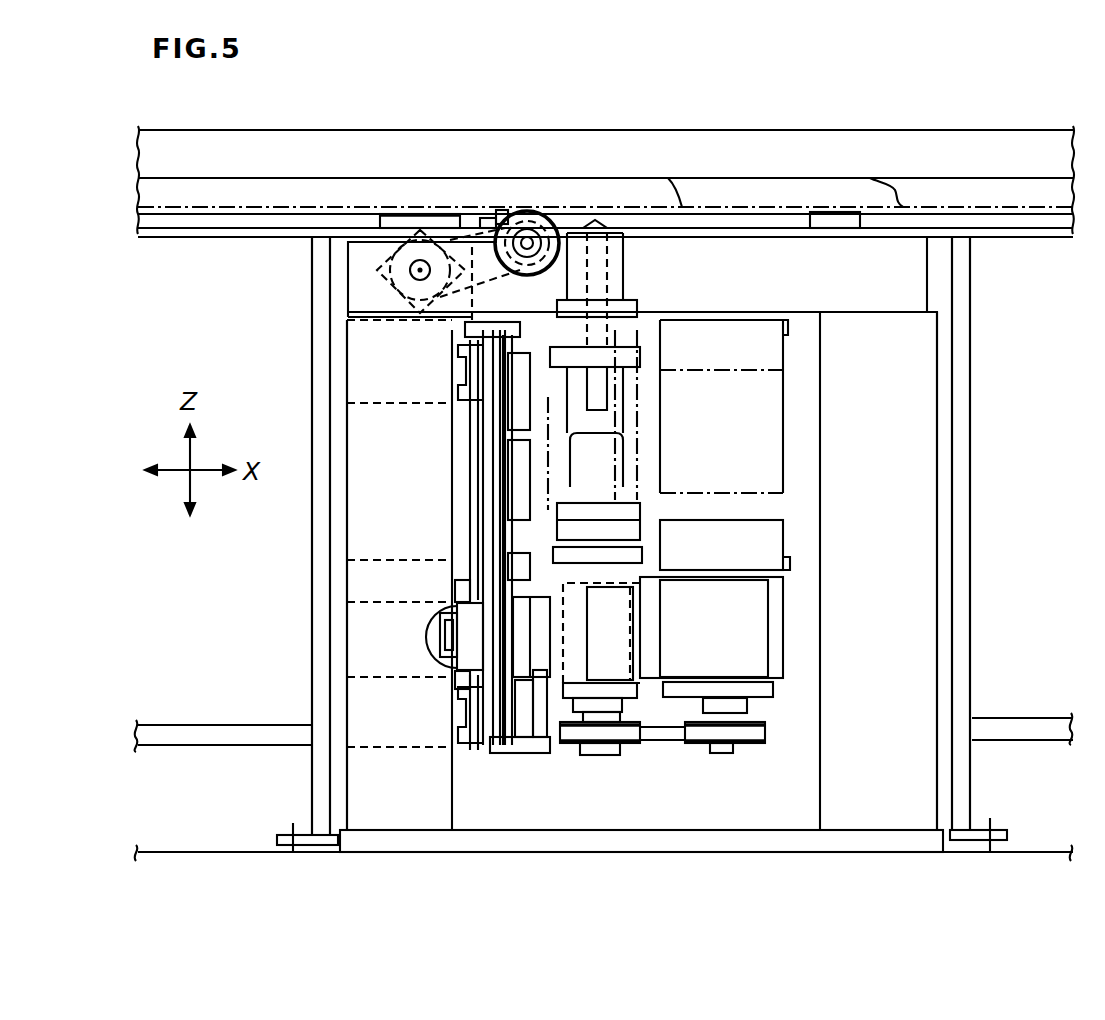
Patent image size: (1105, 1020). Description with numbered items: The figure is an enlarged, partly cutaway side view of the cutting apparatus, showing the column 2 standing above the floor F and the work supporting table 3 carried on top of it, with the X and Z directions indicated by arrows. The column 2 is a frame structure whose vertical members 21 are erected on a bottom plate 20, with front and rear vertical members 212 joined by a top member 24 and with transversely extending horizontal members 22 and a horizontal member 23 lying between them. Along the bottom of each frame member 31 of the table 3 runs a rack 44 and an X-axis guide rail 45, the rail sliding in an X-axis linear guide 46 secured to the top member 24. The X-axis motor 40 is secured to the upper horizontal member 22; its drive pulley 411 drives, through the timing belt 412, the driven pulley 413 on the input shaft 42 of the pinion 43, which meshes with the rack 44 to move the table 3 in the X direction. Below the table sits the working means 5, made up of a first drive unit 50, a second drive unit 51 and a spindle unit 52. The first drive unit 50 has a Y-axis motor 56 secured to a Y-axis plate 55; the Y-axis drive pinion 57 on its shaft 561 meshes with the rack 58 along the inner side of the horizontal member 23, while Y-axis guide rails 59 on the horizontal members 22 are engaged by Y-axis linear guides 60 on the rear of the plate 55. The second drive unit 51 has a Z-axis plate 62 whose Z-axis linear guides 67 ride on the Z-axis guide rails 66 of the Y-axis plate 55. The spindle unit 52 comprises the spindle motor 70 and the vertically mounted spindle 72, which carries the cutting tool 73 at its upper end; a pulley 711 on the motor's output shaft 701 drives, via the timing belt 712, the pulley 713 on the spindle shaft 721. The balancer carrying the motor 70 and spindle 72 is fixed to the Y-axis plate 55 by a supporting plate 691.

The column 2 is at (940, 417).
The work supporting table 3 is at (965, 128).
The working means 5 is at (800, 485).
The bottom plate 20 is at (625, 840).
The vertical members 21 is at (358, 782).
The horizontal members 22 is at (357, 320).
The horizontal member 23 is at (365, 560).
The top members 24 is at (910, 298).
The frame members 31 is at (219, 147).
The X-axis motor 40 is at (370, 254).
The input shaft 42 is at (530, 240).
The pinion 43 is at (520, 235).
The rack 44 is at (254, 213).
The X-axis guide rails 45 is at (190, 226).
The X-axis linear guides 46 is at (380, 222).
The first drive unit 50 is at (438, 632).
The second drive unit 51 is at (655, 508).
The spindle unit 52 is at (616, 748).
The Y-axis plate 55 is at (490, 482).
The Y-axis motor 56 is at (760, 637).
The Y-axis drive pinion 57 is at (460, 650).
The rack 58 is at (467, 577).
The Y-axis guide rails 59 is at (455, 375).
The Y-axis linear guides 60 is at (470, 392).
The Z-axis plate 62 is at (545, 720).
The Z-axis guide rails 66 is at (500, 750).
The Z-axis linear guides 67 is at (518, 720).
The spindle motor 70 is at (774, 551).
The spindle 72 is at (630, 510).
The cutting tool 73 is at (602, 270).
The front and rear vertical members 212 is at (355, 465).
The drive pulley 411 is at (382, 272).
The timing belt 412 is at (485, 232).
The driven pulley 413 is at (543, 255).
The shaft 561 is at (443, 640).
The supporting plate 691 is at (570, 750).
The output shaft 701 is at (755, 755).
The pulley 711 is at (755, 745).
The timing belt 712 is at (678, 730).
The pulley 713 is at (633, 737).
The shaft 721 is at (600, 720).
The floor F is at (1040, 845).